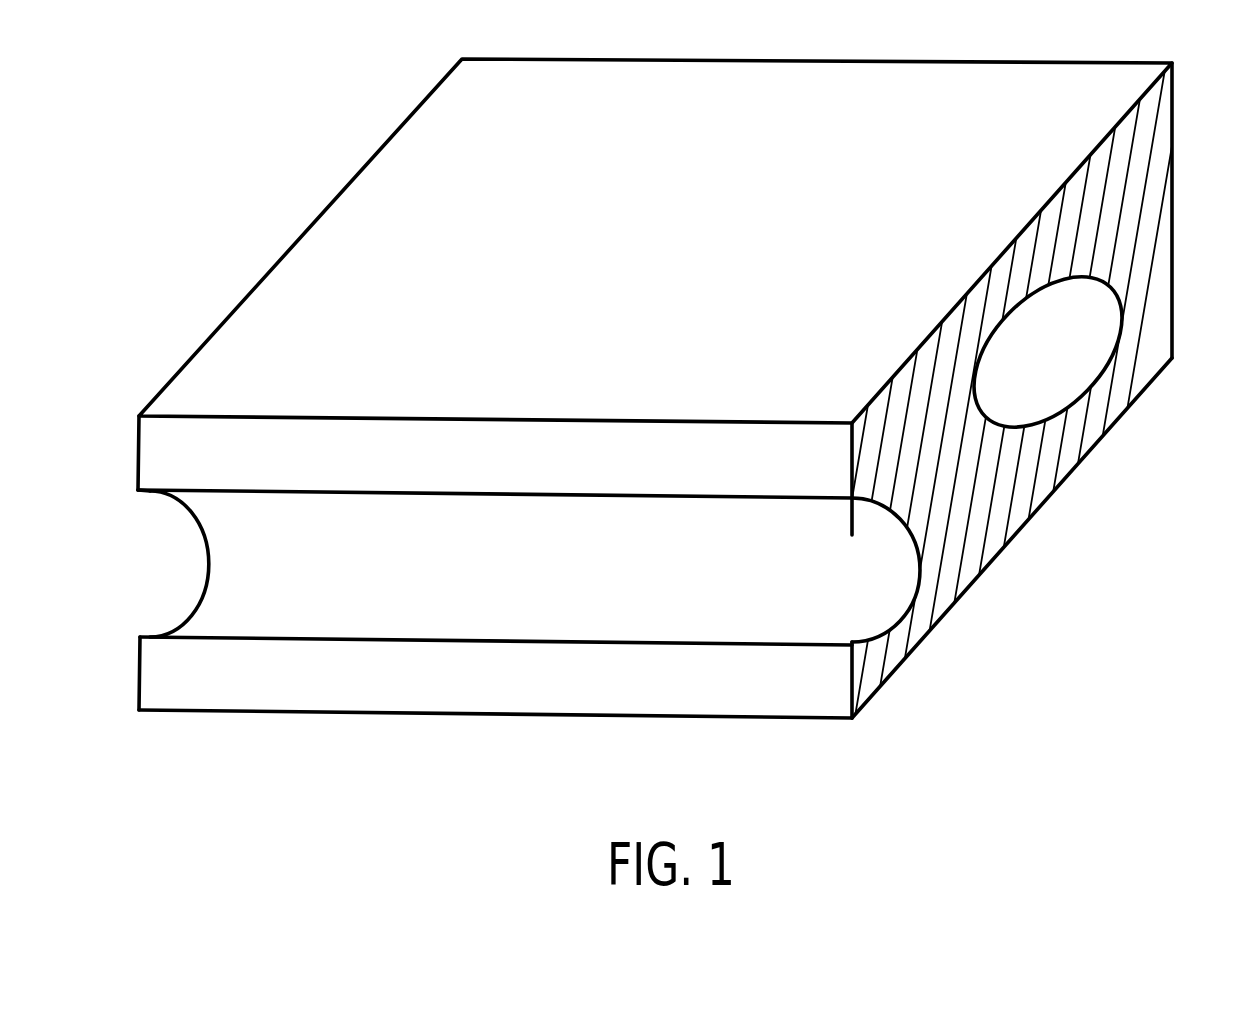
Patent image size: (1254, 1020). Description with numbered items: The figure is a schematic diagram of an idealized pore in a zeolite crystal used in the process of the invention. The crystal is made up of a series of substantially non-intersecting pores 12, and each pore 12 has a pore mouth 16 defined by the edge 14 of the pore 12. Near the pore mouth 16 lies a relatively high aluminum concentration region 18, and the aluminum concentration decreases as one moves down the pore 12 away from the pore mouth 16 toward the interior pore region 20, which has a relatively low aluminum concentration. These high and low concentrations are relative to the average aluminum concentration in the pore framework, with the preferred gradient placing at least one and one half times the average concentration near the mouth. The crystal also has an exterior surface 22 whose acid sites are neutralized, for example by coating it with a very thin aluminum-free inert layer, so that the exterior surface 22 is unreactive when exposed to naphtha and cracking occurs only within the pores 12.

The pore 12 is at (1065, 355).
The edge 14 is at (883, 545).
The pore mouth 16 is at (852, 500).
The relatively high aluminum concentration region 18 is at (710, 608).
The interior pore region 20 is at (497, 532).
The exterior surface 22 is at (993, 500).